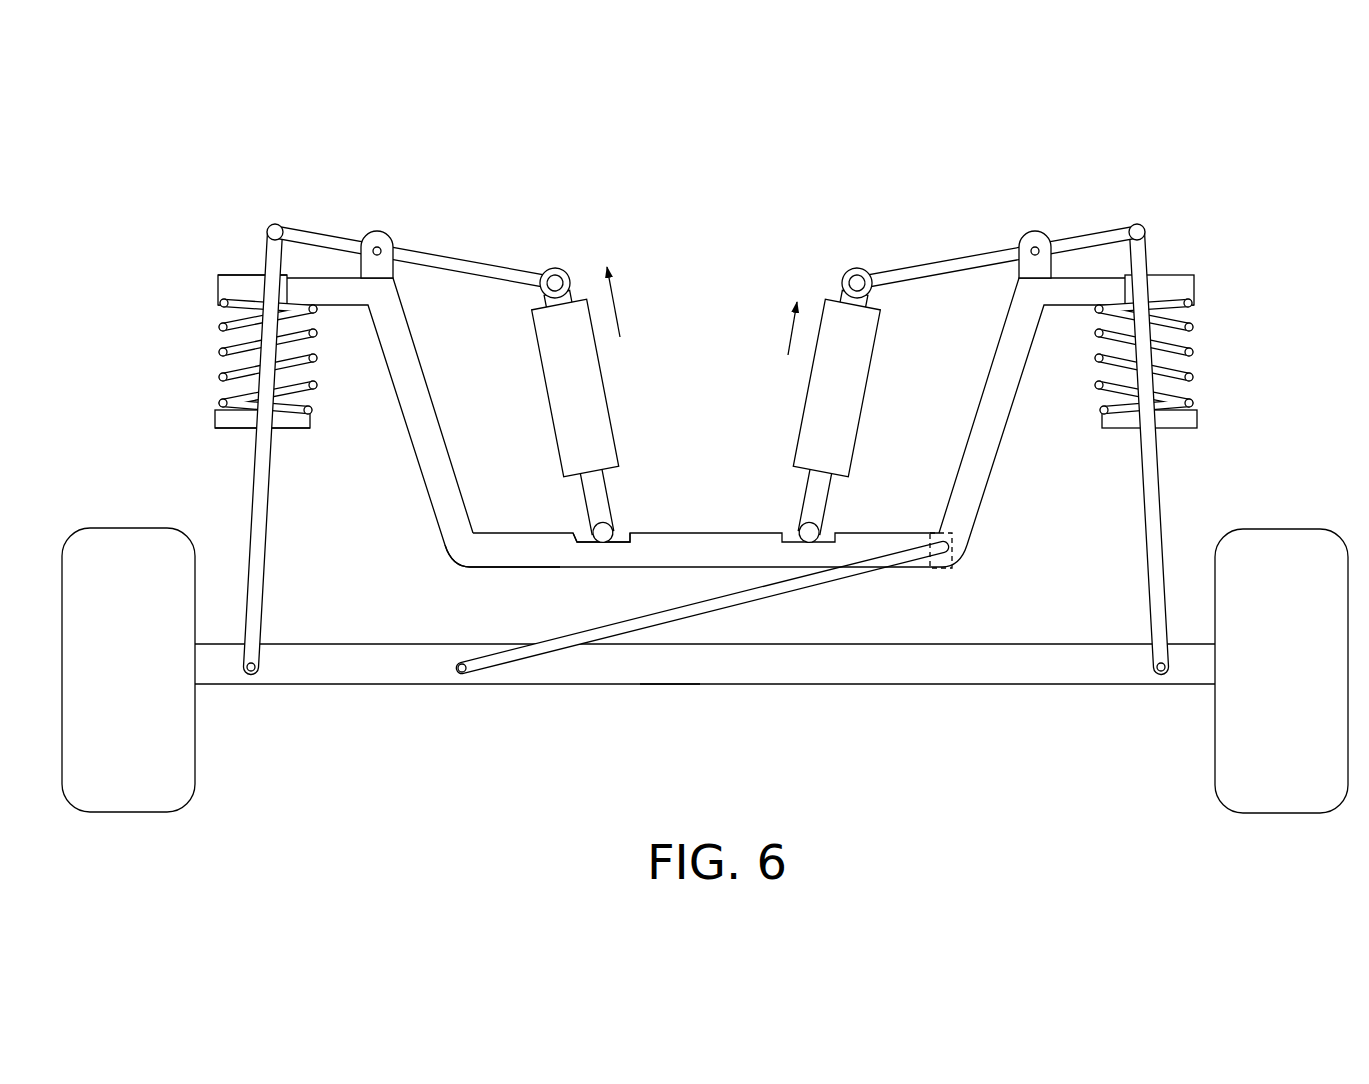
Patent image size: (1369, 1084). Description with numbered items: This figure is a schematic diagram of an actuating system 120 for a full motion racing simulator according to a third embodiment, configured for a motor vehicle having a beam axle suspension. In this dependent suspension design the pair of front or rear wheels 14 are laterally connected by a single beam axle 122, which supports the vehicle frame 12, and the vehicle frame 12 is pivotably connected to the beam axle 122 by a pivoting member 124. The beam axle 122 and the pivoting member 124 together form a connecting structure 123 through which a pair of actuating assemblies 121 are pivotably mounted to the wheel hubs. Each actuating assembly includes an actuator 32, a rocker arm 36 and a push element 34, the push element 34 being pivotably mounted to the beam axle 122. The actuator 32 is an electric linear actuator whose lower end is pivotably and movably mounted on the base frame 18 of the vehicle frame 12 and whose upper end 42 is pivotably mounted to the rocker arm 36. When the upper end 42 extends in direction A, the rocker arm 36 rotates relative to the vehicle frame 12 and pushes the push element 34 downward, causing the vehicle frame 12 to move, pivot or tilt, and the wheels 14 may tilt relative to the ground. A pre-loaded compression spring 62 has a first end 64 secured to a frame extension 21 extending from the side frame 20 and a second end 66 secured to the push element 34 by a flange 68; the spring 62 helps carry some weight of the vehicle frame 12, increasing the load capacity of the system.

The actuating system 120 is at (647, 164).
The vehicle frame 12 is at (405, 567).
The wheels 14 is at (103, 813).
The base frame 18 is at (650, 568).
The side frame 20 is at (407, 440).
The frame extension 21 is at (238, 275).
The actuator 32 is at (800, 413).
The push element 34 is at (252, 505).
The rocker arm 36 is at (451, 250).
The upper end 42 is at (577, 542).
The compression spring 62 is at (190, 350).
The first end 64 is at (215, 305).
The second end 66 is at (218, 410).
The flange 68 is at (230, 426).
The actuating assemblies 121 is at (367, 197).
The beam axle 122 is at (794, 687).
The connecting structure 123 is at (664, 712).
The pivoting member 124 is at (784, 596).